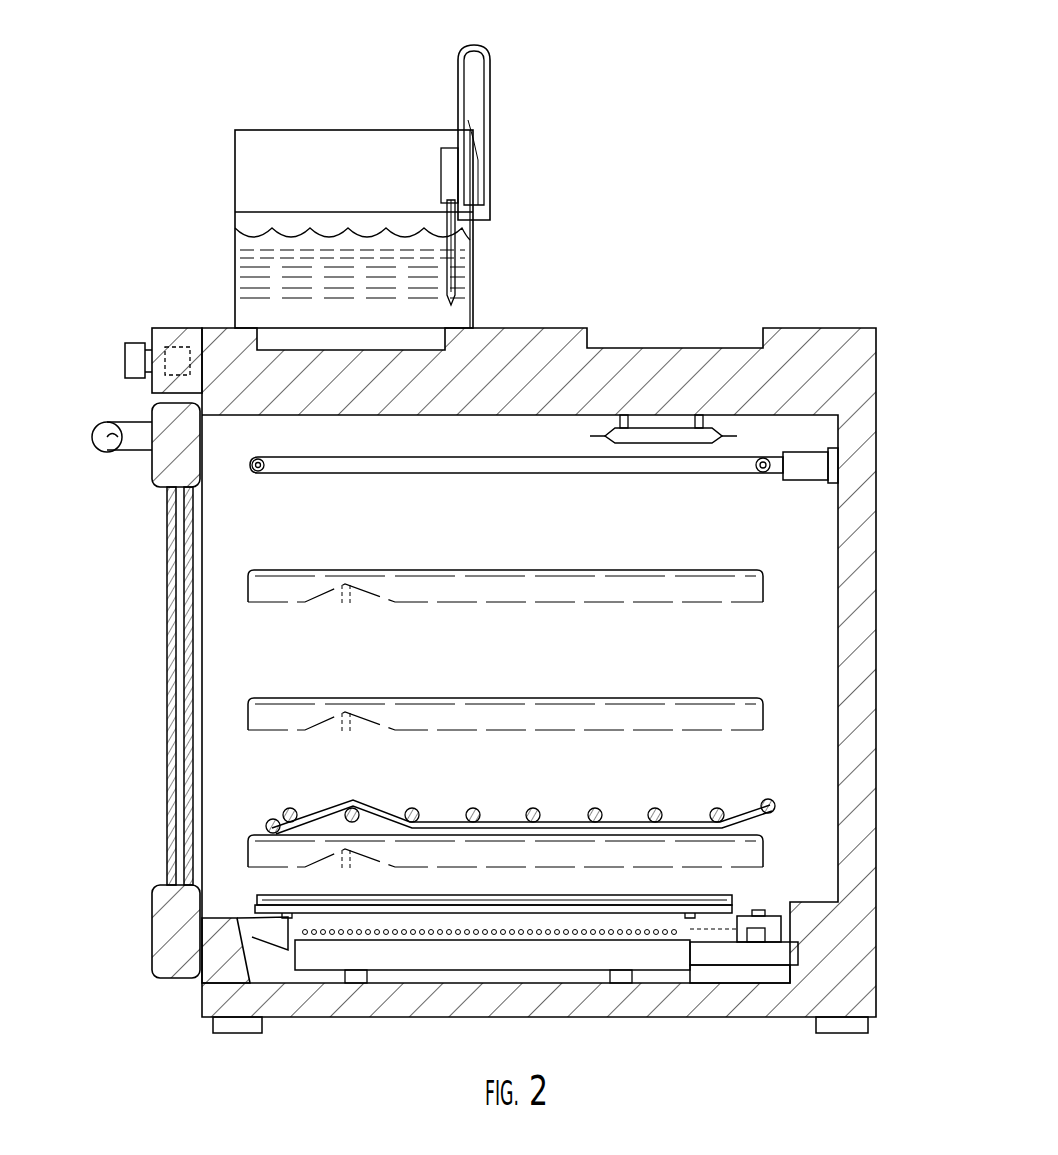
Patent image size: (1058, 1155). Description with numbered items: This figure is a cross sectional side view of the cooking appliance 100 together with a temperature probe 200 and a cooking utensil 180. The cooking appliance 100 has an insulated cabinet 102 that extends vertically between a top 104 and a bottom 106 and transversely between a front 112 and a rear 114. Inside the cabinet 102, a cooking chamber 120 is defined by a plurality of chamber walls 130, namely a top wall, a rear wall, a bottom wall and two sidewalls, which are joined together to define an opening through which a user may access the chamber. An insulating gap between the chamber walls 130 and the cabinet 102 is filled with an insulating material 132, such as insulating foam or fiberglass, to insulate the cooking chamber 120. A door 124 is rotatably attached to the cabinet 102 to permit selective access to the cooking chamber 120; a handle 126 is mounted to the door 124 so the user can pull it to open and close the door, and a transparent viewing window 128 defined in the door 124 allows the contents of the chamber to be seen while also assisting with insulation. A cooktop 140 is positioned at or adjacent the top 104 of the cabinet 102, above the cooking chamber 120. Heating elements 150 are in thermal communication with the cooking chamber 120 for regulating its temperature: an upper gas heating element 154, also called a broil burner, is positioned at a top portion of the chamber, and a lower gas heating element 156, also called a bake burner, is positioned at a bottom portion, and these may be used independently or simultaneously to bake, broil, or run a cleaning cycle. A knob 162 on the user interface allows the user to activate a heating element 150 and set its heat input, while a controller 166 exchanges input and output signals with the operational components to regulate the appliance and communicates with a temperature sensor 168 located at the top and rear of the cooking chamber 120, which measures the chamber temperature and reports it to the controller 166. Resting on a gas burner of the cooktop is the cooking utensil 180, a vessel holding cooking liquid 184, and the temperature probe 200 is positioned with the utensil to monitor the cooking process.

The cooking appliance 100 is at (920, 295).
The insulated cabinet 102 is at (878, 418).
The top 104 is at (118, 323).
The bottom 106 is at (190, 1003).
The front 112 is at (150, 915).
The rear 114 is at (880, 950).
The cooking chamber 120 is at (757, 645).
The door 124 is at (168, 475).
The handle 126 is at (105, 428).
The transparent viewing window 128 is at (167, 710).
The chamber walls 130 is at (480, 428).
The insulating material 132 is at (785, 355).
The cooktop 140 is at (545, 328).
The heating elements 150 is at (648, 328).
The upper gas heating element 154 is at (445, 468).
The lower gas heating element 156 is at (510, 960).
The knob 162 is at (131, 363).
The controller 166 is at (177, 330).
The temperature sensor 168 is at (680, 430).
The cooking utensil 180 is at (233, 198).
The cooking liquid 184 is at (458, 262).
The temperature probe 200 is at (493, 80).